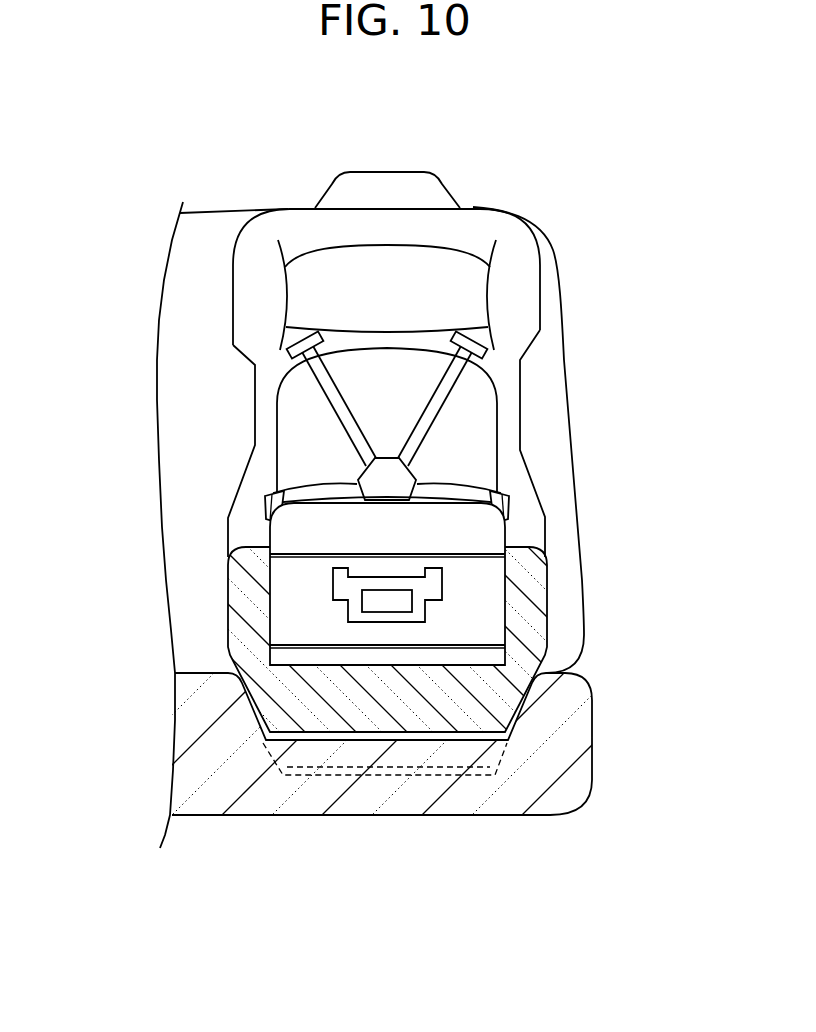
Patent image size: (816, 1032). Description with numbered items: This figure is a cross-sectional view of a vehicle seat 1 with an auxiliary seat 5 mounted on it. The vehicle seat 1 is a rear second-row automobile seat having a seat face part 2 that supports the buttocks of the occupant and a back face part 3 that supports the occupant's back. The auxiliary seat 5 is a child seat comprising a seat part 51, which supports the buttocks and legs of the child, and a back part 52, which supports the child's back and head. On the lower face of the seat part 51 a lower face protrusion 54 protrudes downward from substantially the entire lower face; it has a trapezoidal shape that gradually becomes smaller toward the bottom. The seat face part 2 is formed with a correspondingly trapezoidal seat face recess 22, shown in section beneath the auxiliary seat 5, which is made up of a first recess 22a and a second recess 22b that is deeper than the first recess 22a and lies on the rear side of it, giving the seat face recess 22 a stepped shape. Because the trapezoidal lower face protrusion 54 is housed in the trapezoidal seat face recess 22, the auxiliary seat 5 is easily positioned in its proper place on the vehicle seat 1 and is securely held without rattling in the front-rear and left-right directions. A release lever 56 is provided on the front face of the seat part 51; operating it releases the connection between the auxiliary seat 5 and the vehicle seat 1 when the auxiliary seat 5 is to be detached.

The vehicle seat 1 is at (608, 217).
The seat face part 2 is at (592, 733).
The back face part 3 is at (558, 343).
The auxiliary seat 5 is at (218, 381).
The seat face recess 22 is at (503, 807).
The first recess 22a is at (525, 725).
The second recess 22b is at (683, 808).
The seat part 51 is at (553, 502).
The back part 52 is at (492, 187).
The lower face protrusion 54 is at (247, 692).
The release lever 56 is at (422, 607).